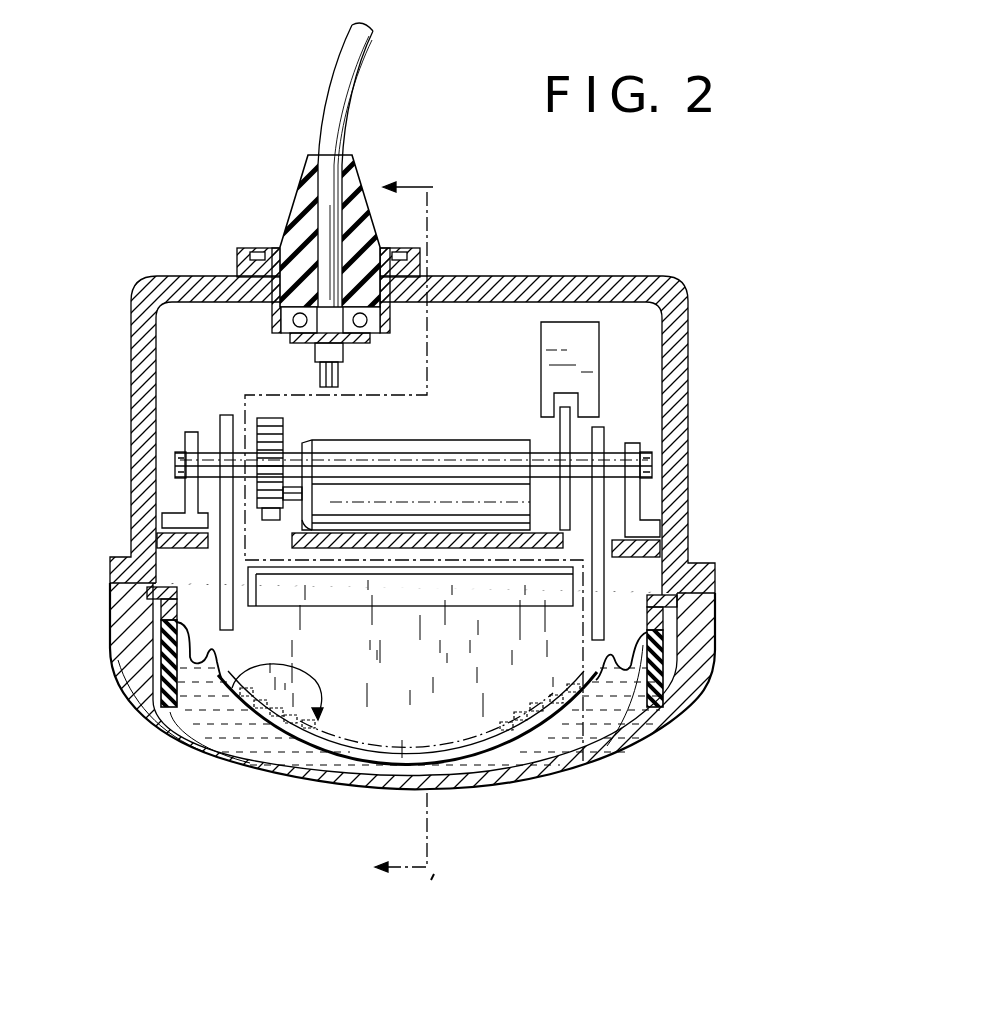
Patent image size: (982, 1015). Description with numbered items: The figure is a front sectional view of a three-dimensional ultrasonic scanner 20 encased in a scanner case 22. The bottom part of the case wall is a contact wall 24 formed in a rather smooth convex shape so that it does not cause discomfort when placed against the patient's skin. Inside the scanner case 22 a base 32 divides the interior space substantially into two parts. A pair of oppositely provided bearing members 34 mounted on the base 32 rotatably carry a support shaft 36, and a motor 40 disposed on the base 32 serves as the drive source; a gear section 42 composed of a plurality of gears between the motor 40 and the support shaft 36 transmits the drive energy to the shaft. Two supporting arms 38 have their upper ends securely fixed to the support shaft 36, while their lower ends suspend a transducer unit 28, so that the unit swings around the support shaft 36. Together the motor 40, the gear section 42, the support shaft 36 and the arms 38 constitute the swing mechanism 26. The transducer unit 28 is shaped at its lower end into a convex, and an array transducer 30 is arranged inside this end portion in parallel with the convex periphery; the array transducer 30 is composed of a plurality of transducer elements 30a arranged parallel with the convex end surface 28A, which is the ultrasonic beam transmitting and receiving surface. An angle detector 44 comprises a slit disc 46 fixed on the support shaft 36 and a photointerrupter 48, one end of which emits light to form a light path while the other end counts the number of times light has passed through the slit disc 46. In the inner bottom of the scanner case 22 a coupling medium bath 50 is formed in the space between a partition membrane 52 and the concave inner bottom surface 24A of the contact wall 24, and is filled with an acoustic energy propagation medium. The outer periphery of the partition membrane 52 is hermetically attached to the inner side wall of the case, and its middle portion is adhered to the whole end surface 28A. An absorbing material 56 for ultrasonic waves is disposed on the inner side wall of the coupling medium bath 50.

The ultrasonic scanner 20 is at (570, 232).
The scanner case 22 is at (594, 277).
The contact wall 24 is at (333, 782).
The concave inner bottom surface 24A is at (282, 749).
The swing mechanism 26 is at (430, 422).
The transducer unit 28 is at (397, 722).
The convex-shape end surface 28A is at (541, 740).
The array transducer 30 is at (170, 732).
The transducer elements 30a is at (213, 747).
The base 32 is at (652, 550).
The bearing members 34 is at (632, 505).
The support shaft 36 is at (176, 458).
The supporting arms 38 is at (598, 621).
The motor 40 is at (487, 440).
The gear section 42 is at (267, 417).
The angle detector 44 is at (788, 328).
The slit disc 46 is at (571, 437).
The photointerrupter 48 is at (582, 343).
The coupling medium bath 50 is at (605, 720).
The partition membrane 52 is at (650, 730).
The absorbing material 56 is at (658, 672).